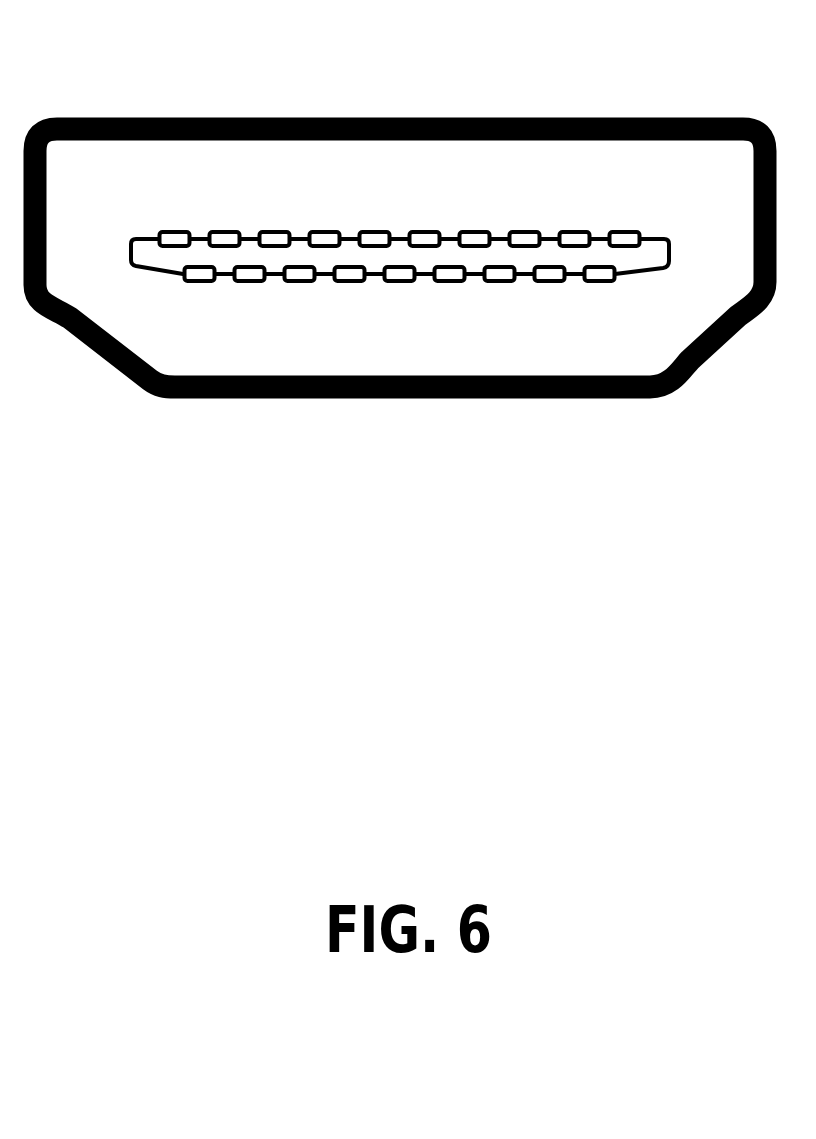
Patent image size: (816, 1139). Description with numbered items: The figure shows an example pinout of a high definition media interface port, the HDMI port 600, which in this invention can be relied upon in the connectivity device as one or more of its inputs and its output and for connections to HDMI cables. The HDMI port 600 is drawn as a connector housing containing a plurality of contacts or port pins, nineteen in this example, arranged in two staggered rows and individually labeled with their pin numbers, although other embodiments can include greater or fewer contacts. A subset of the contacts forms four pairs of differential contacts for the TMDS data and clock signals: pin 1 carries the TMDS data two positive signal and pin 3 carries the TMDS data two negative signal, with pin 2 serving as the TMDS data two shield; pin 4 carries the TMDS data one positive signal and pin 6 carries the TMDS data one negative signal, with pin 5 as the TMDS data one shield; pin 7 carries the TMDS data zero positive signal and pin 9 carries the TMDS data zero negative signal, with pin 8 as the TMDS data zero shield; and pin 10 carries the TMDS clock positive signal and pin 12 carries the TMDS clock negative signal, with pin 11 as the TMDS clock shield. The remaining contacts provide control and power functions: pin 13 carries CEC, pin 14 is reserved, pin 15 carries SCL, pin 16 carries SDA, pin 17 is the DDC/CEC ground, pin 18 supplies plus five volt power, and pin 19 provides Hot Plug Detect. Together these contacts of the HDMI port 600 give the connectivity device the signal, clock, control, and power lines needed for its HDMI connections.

The HDMI port 600 is at (97, 48).
The HDMI port pin 1 is at (625, 226).
The HDMI port pin 2 is at (600, 291).
The HDMI port pin 3 is at (575, 226).
The HDMI port pin 4 is at (550, 291).
The HDMI port pin 5 is at (525, 226).
The HDMI port pin 6 is at (500, 291).
The HDMI port pin 7 is at (475, 226).
The HDMI port pin 8 is at (450, 291).
The HDMI port pin 9 is at (425, 226).
The HDMI port pin 10 is at (399, 291).
The HDMI port pin 11 is at (374, 226).
The HDMI port pin 12 is at (349, 291).
The HDMI port pin 13 is at (324, 226).
The HDMI port pin 14 is at (299, 291).
The HDMI port pin 15 is at (274, 226).
The HDMI port pin 16 is at (249, 291).
The HDMI port pin 17 is at (224, 226).
The HDMI port pin 18 is at (199, 291).
The HDMI port pin 19 is at (174, 226).